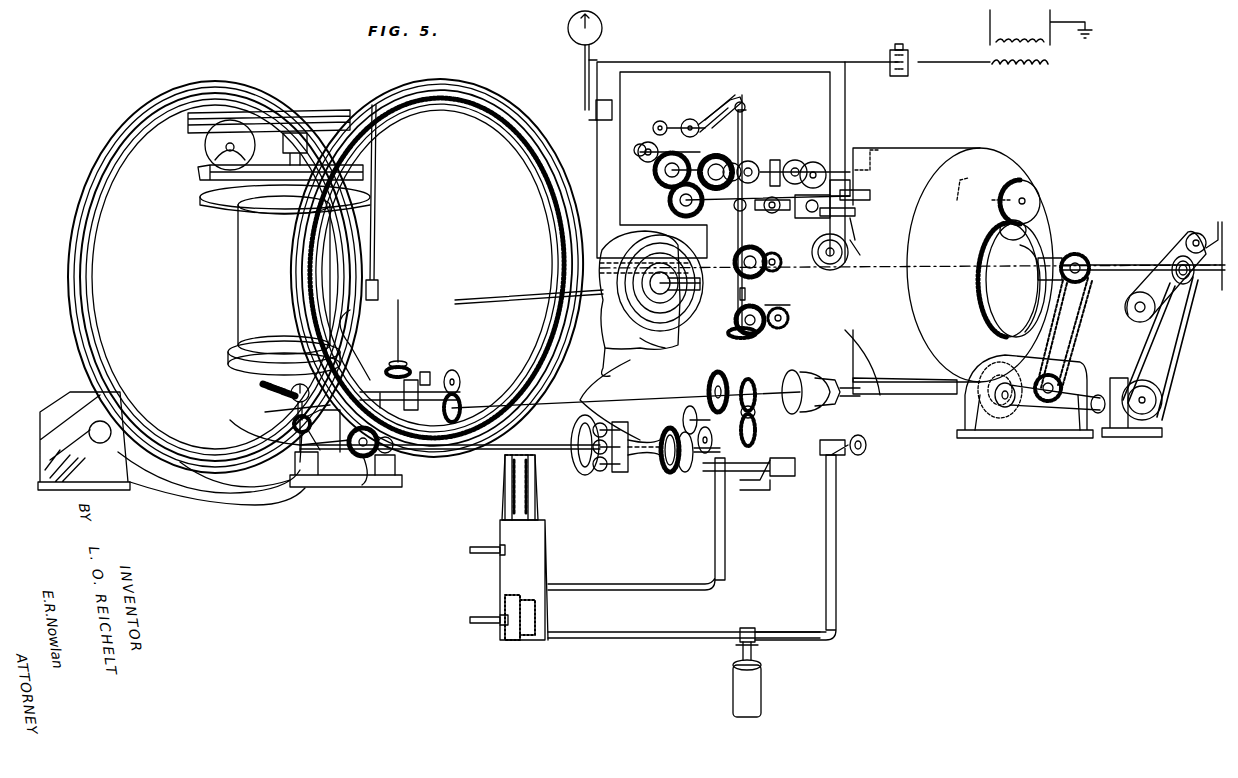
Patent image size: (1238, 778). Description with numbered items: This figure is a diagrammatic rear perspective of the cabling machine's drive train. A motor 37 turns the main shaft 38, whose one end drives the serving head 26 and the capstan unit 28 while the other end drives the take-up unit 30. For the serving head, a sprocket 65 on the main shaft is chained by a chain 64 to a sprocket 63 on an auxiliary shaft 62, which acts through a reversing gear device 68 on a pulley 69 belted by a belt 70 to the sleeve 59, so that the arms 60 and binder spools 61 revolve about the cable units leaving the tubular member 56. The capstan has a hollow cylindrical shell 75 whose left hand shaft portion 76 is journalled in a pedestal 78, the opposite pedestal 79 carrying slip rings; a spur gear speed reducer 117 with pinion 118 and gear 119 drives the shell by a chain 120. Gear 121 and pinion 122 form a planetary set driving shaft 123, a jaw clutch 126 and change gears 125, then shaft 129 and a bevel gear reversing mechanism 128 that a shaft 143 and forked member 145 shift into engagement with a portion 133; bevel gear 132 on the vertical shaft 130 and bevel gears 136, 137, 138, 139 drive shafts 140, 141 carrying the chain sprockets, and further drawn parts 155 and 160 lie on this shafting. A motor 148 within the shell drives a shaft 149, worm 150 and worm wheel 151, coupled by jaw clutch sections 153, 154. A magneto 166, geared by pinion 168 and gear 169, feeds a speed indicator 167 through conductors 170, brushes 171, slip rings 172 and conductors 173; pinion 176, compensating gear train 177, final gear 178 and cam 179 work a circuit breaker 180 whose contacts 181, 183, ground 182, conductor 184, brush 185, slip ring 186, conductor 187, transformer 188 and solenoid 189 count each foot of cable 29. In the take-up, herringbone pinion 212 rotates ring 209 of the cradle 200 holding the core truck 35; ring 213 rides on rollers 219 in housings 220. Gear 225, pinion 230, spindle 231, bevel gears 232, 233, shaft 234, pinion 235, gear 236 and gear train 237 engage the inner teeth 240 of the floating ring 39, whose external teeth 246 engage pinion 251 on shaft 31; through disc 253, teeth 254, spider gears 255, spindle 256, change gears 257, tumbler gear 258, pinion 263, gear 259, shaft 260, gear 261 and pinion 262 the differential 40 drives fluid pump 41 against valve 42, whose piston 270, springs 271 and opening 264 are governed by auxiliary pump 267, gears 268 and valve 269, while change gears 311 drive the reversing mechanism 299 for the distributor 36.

The serving head 26 is at (1160, 245).
The capstan unit 28 is at (887, 148).
The cable 29 is at (533, 296).
The take-up unit 30 is at (455, 80).
The shaft 31 is at (455, 450).
The core truck 35 is at (210, 215).
The distributor 36 is at (402, 296).
The motor 37 is at (800, 372).
The main shaft 38 is at (880, 350).
The floating ring 39 is at (505, 108).
The differential 40 is at (628, 475).
The fluid pump 41 is at (740, 490).
The valve 42 is at (500, 573).
The tubular member 56 is at (1222, 228).
The sleeve 59 is at (1182, 285).
The arms 60 is at (1183, 312).
The spool 61 is at (1185, 230).
The auxiliary shaft 62 is at (1150, 400).
The sprocket 63 is at (1095, 414).
The chain 64 is at (1045, 412).
The sprocket 65 is at (1003, 410).
The reversing gear device 68 is at (1120, 437).
The pulley 69 is at (1155, 388).
The belt 70 is at (1172, 358).
The hollow cylindrical shell 75 is at (940, 148).
The left hand shaft portion 76 is at (1060, 255).
The pedestal 78 is at (1060, 268).
The pedestal 79 is at (605, 375).
The spur gear speed reducer 117 is at (962, 438).
The pinion 118 is at (965, 403).
The gear 119 is at (990, 360).
The chain 120 is at (1062, 325).
The gear 121 is at (990, 315).
The pinion 122 is at (1003, 226).
The shaft 123 is at (958, 200).
The change gears 125 is at (670, 195).
The jaw clutch 126 is at (790, 158).
The bevel gear reversing mechanism 128 is at (752, 158).
The shaft 129 is at (655, 172).
The vertically positioned shaft 130 is at (736, 292).
The bevel gear 132 is at (735, 182).
The portion 133 is at (745, 150).
The bevel gear 136 is at (740, 210).
The bevel gear 137 is at (750, 335).
The bevel gear 138 is at (738, 263).
The bevel gear 139 is at (768, 328).
The shaft 140 is at (780, 270).
The shaft 141 is at (790, 310).
The shaft 143 is at (772, 108).
The forked member 145 is at (748, 110).
The motor 148 is at (865, 238).
The shaft 149 is at (870, 210).
The worm 150 is at (870, 192).
The worm wheel 151 is at (827, 215).
The jaw clutch section 153 is at (872, 255).
The jaw clutch section 154 is at (830, 253).
The plate 155 is at (775, 155).
The clutch 160 is at (782, 215).
The magneto 166 is at (878, 175).
The speed indicator 167 is at (567, 28).
The pinion 168 is at (845, 145).
The gear 169 is at (800, 165).
The electrical conductors 170 is at (790, 62).
The brushes 171 is at (650, 250).
The slip rings 172 is at (630, 312).
The electrical conductors 173 is at (592, 138).
The pinion 176 is at (634, 150).
The compensating gear train 177 is at (650, 140).
The final gear 178 is at (655, 120).
The cam 179 is at (715, 100).
The circuit breaker 180 is at (708, 95).
The contact 181 is at (715, 108).
The ground 182 is at (745, 95).
The contact 183 is at (710, 90).
The electrical conductor 184 is at (650, 85).
The brush 185 is at (690, 300).
The slip ring 186 is at (660, 345).
The electrical conductor 187 is at (850, 62).
The transformer 188 is at (1005, 42).
The solenoid 189 is at (906, 50).
The cradle 200 is at (236, 80).
The ring 209 is at (300, 296).
The herringbone pinion 212 is at (300, 350).
The ring 213 is at (100, 304).
The rollers 219 is at (265, 478).
The housings 220 is at (270, 500).
The gear 225 is at (258, 386).
The pinion 230 is at (292, 402).
The spindle 231 is at (265, 412).
The bevel gear 232 is at (290, 424).
The bevel gear 233 is at (300, 436).
The shaft 234 is at (292, 482).
The pinion 235 is at (412, 360).
The gear 236 is at (455, 372).
The gear train 237 is at (350, 452).
The inner peripheral teeth 240 is at (558, 250).
The external peripheral teeth 246 is at (318, 258).
The pinion 251 is at (395, 478).
The disc 253 is at (520, 455).
The internal peripheral teeth 254 is at (600, 475).
The spider gears 255 is at (580, 470).
The hollow spindle 256 is at (650, 470).
The change gears 257 is at (680, 470).
The tumbler gear 258 is at (684, 410).
The gear 259 is at (632, 444).
The shaft 260 is at (715, 470).
The gear 261 is at (718, 437).
The pinion 262 is at (695, 475).
The pinion 263 is at (690, 380).
The opening 264 is at (495, 615).
The auxiliary pump 267 is at (830, 458).
The gears 268 is at (733, 412).
The valve 269 is at (762, 685).
The piston 270 is at (540, 630).
The springs 271 is at (505, 490).
The bevel gear reversing mechanism 299 is at (432, 360).
The change gears 311 is at (462, 390).